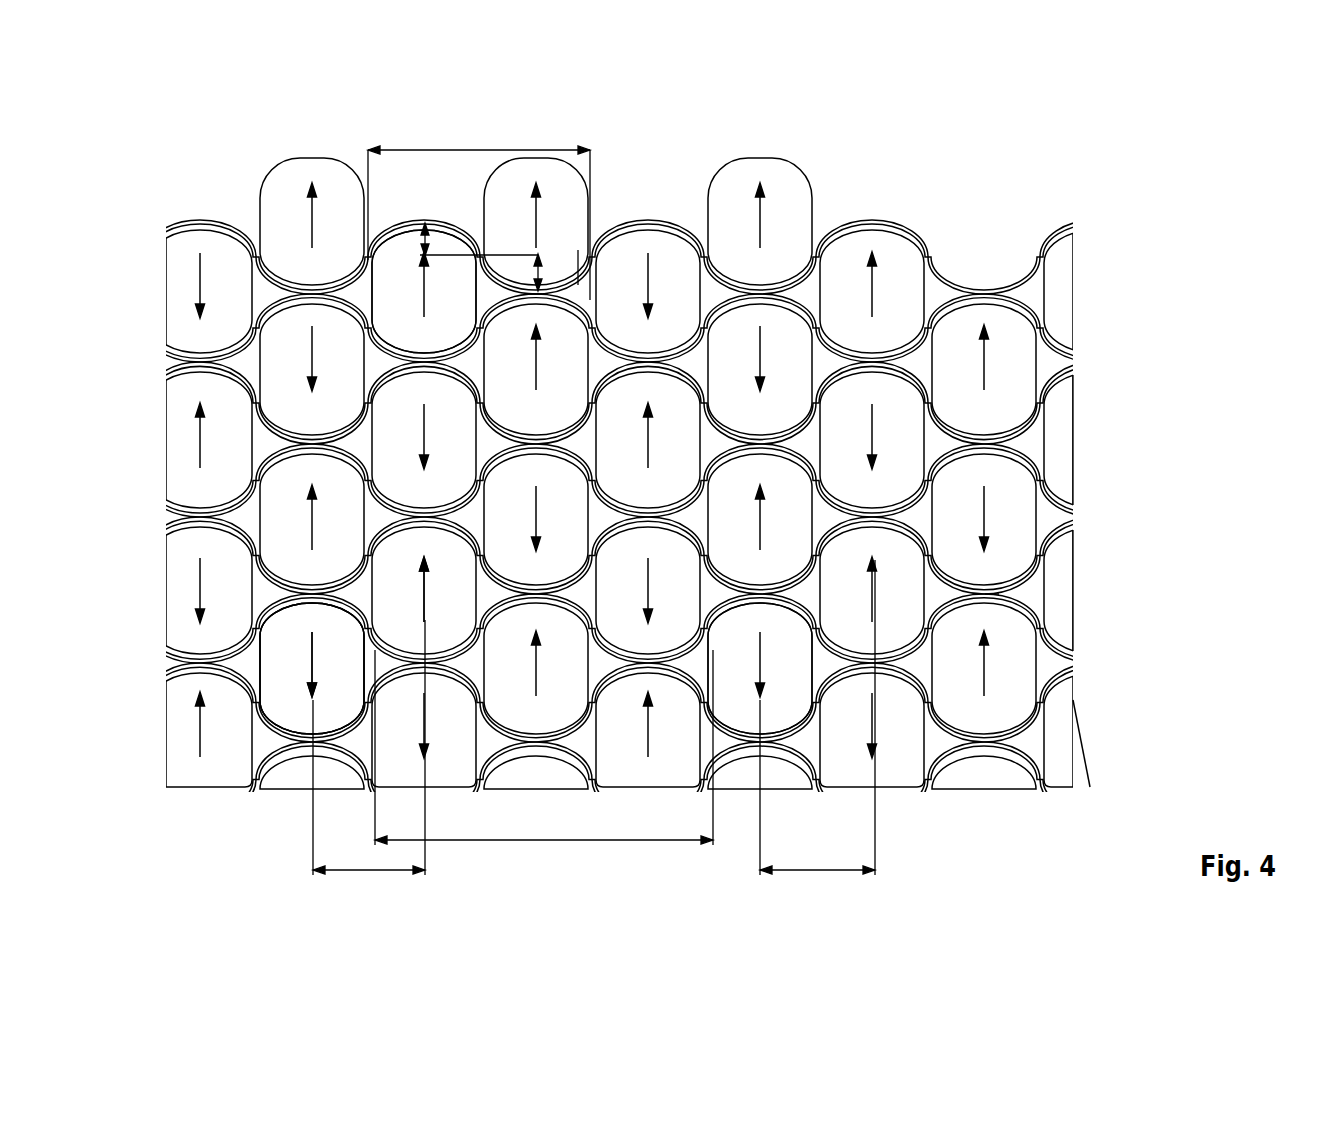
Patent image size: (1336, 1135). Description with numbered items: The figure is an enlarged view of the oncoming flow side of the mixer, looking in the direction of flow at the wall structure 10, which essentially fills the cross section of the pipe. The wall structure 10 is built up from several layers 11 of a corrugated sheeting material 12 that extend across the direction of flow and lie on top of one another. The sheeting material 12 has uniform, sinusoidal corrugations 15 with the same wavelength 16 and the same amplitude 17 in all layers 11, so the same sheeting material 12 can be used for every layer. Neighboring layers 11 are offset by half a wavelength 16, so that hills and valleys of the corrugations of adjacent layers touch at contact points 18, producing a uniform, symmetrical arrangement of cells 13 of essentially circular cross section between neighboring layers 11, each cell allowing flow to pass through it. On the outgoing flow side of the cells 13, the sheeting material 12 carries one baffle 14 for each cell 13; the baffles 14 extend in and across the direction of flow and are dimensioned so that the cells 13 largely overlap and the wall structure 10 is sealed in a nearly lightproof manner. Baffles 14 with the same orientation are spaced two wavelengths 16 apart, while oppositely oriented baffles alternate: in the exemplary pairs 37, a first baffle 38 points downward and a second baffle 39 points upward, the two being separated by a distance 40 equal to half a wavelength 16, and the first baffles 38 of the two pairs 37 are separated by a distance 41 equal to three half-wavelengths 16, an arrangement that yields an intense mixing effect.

The wall structure 10 is at (1121, 258).
The layers 11 is at (1077, 412).
The sheeting material 12 is at (1027, 418).
The cells 13 is at (460, 319).
The baffle 14 is at (404, 262).
The corrugations 15 is at (578, 266).
The wavelength 16 is at (478, 150).
The amplitude 17 is at (425, 223).
The contact points 18 is at (539, 305).
The pair of baffles 37 is at (935, 843).
The first baffle 38 is at (351, 673).
The second baffle 39 is at (466, 613).
The distance 40 is at (372, 880).
The distance 41 is at (537, 848).